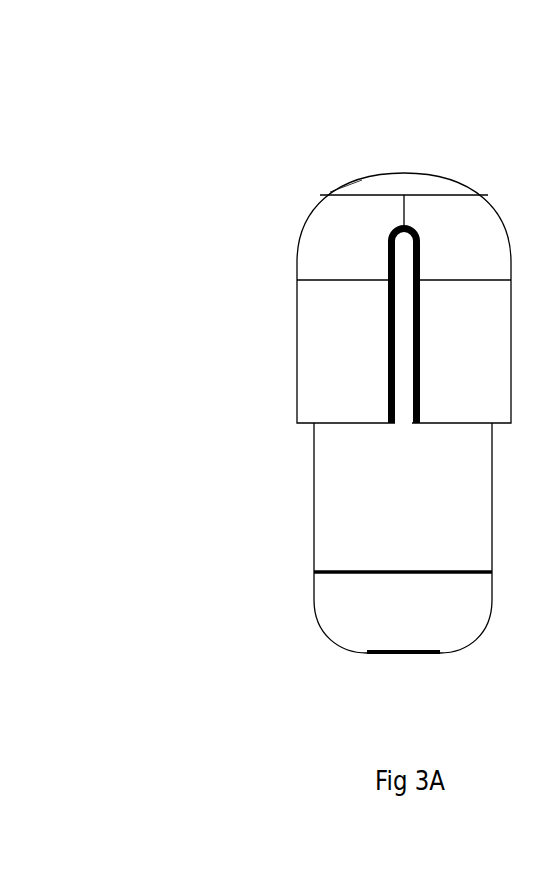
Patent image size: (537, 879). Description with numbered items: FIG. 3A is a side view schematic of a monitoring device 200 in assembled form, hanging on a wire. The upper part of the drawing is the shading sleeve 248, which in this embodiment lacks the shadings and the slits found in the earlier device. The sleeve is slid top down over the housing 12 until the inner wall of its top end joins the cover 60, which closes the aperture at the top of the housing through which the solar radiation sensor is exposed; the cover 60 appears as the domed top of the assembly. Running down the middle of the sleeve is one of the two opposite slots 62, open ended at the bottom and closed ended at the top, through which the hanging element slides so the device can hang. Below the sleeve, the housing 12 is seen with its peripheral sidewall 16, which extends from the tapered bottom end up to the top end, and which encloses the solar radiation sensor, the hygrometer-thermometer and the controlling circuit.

The monitoring device 200 is at (177, 353).
The shading sleeve 248 is at (277, 272).
The cover 60 is at (337, 182).
The slots 62 is at (403, 290).
The housing 12 is at (278, 462).
The peripheral sidewall 16 is at (343, 502).